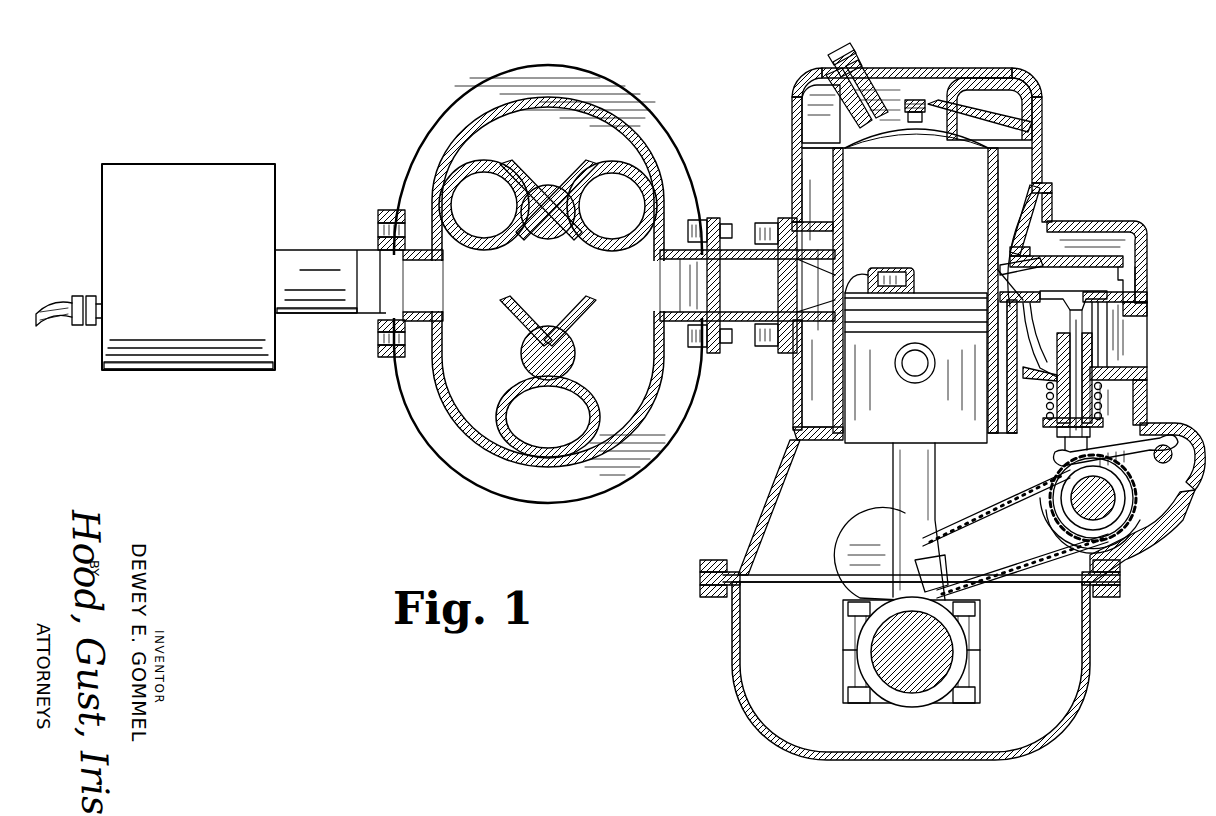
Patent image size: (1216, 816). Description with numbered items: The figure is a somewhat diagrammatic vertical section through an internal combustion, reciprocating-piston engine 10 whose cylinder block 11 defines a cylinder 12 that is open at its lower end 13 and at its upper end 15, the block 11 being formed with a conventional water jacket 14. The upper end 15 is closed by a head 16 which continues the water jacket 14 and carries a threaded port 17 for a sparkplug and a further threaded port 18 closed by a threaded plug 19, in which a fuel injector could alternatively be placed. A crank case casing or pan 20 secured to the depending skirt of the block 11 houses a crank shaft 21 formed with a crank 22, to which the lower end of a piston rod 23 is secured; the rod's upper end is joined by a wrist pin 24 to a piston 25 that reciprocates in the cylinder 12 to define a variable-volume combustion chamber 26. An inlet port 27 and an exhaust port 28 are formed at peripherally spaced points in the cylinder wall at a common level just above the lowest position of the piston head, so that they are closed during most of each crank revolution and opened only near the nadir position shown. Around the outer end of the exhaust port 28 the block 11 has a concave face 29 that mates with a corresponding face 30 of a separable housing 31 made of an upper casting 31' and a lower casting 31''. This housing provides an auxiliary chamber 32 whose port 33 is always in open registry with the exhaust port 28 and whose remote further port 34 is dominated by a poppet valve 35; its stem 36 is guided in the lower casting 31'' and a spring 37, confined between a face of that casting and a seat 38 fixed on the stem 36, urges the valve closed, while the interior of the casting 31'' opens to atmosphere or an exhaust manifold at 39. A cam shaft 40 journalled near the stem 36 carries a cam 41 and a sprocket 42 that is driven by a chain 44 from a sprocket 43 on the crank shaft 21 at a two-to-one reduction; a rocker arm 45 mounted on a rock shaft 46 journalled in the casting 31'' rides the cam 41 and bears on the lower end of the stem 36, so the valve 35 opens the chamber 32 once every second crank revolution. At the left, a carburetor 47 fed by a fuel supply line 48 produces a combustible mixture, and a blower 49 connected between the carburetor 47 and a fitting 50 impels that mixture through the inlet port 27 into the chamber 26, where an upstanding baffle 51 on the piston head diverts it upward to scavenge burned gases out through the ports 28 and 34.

The engine 10 is at (954, 388).
The cylinder block 11 is at (792, 172).
The cylinder 12 is at (836, 207).
The lower end of the cylinder 13 is at (847, 434).
The water jacket 14 is at (818, 385).
The upper end of the cylinder 15 is at (950, 148).
The head 16 is at (985, 70).
The threaded port 17 is at (916, 125).
The further threaded port 18 is at (835, 62).
The threaded plug 19 is at (845, 52).
The crank case casing or pan 20 is at (1084, 672).
The crank shaft 21 is at (855, 565).
The crank 22 is at (920, 683).
The piston rod 23 is at (935, 492).
The wrist pin 24 is at (915, 377).
The piston 25 is at (916, 342).
The combustion chamber 26 is at (928, 207).
The inlet port 27 is at (862, 282).
The exhaust port 28 is at (992, 274).
The concave face 29 is at (1035, 202).
The face of the separable housing 30 is at (1000, 194).
The separable housing 31 is at (1098, 236).
The upper casting 31' is at (1089, 243).
The lower casting 31'' is at (1149, 397).
The auxiliary chamber 32 is at (1130, 282).
The port 33 is at (1000, 292).
The further port 34 is at (1036, 303).
The poppet valve 35 is at (1072, 294).
The valve stem 36 is at (1084, 322).
The spring 37 is at (1102, 406).
The seat 38 is at (1052, 426).
The opening to atmosphere or exhaust manifold 39 is at (1147, 342).
The cam shaft 40 is at (1108, 505).
The cam 41 is at (1130, 535).
The sprocket 42 is at (1058, 512).
The sprocket 43 is at (942, 566).
The chain 44 is at (1025, 570).
The rocker arm 45 is at (1062, 460).
The rock shaft 46 is at (1172, 438).
The carburetor 47 is at (203, 330).
The fuel supply line 48 is at (55, 318).
The blower 49 is at (660, 135).
The fitting 50 is at (740, 220).
The baffle 51 is at (905, 270).